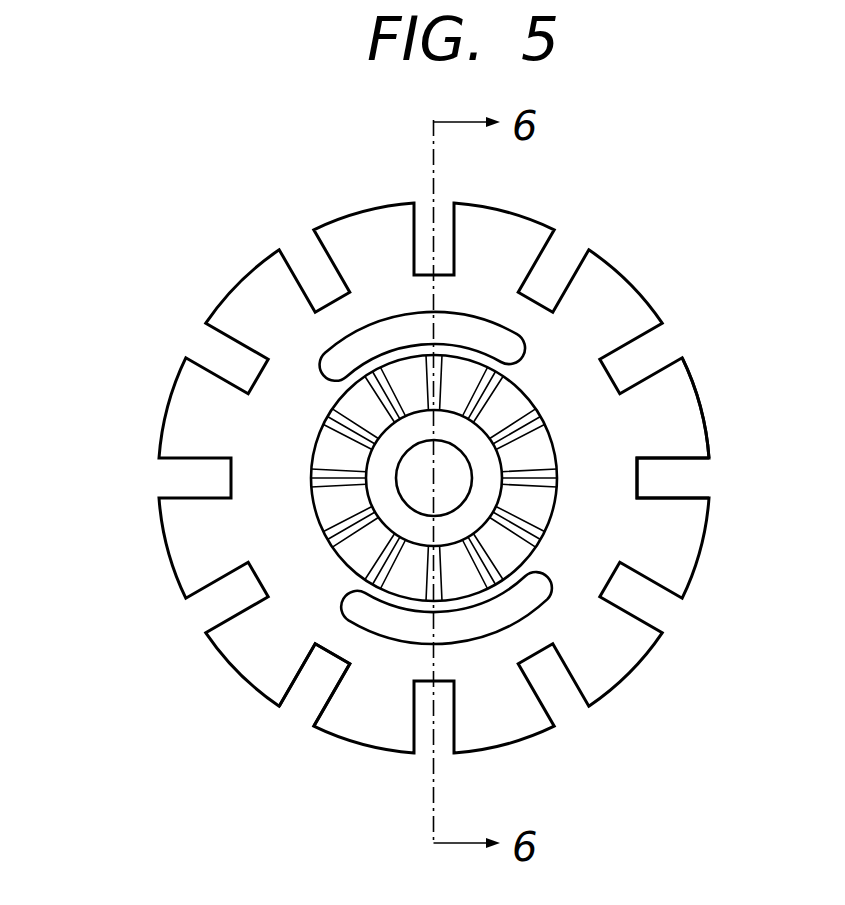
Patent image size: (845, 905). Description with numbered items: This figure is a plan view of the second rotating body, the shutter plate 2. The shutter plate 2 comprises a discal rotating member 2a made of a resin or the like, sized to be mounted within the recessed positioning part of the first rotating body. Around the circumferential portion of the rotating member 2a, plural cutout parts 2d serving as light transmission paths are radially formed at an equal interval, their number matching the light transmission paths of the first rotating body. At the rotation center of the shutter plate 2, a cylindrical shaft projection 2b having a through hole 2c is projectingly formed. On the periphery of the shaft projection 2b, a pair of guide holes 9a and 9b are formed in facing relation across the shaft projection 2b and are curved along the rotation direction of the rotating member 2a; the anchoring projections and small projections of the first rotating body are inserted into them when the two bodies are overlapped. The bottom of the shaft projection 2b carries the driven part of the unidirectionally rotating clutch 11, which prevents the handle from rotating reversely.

The shutter plate 2 is at (684, 279).
The rotating member 2a is at (688, 398).
The shaft projection 2b is at (385, 468).
The through hole 2c is at (458, 468).
The cutout parts 2d is at (698, 472).
The guide hole 9a is at (347, 335).
The guide hole 9b is at (478, 643).
The unidirectionally rotating clutch 11 is at (562, 514).